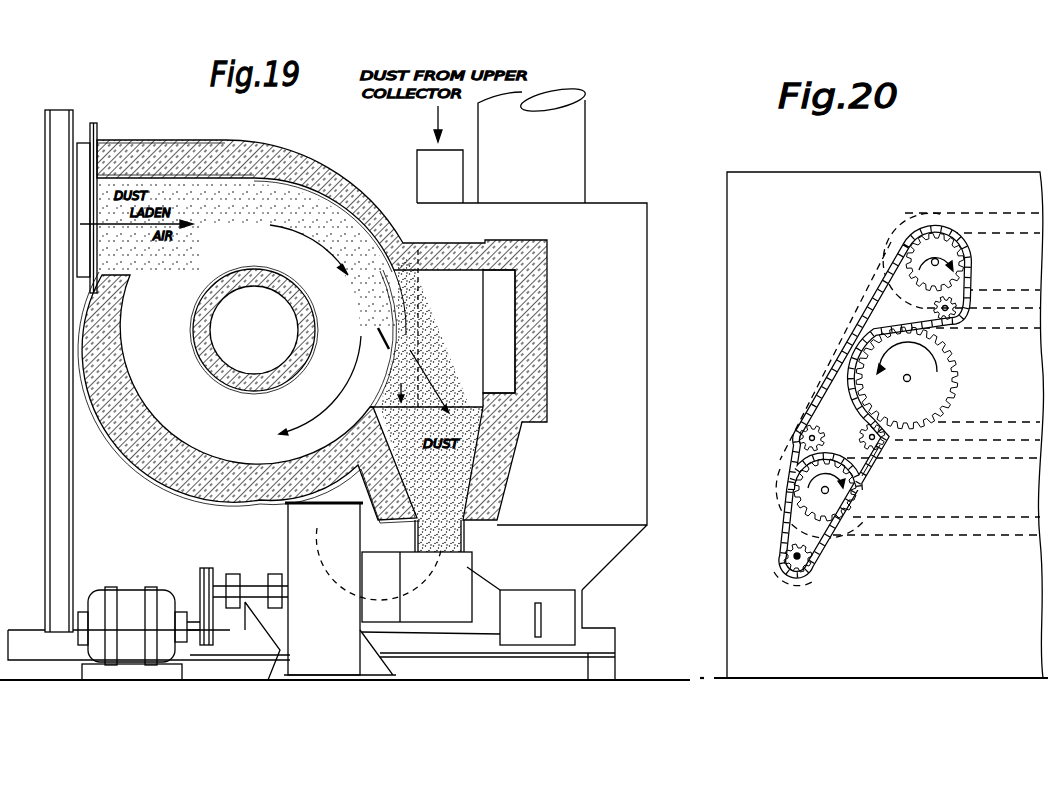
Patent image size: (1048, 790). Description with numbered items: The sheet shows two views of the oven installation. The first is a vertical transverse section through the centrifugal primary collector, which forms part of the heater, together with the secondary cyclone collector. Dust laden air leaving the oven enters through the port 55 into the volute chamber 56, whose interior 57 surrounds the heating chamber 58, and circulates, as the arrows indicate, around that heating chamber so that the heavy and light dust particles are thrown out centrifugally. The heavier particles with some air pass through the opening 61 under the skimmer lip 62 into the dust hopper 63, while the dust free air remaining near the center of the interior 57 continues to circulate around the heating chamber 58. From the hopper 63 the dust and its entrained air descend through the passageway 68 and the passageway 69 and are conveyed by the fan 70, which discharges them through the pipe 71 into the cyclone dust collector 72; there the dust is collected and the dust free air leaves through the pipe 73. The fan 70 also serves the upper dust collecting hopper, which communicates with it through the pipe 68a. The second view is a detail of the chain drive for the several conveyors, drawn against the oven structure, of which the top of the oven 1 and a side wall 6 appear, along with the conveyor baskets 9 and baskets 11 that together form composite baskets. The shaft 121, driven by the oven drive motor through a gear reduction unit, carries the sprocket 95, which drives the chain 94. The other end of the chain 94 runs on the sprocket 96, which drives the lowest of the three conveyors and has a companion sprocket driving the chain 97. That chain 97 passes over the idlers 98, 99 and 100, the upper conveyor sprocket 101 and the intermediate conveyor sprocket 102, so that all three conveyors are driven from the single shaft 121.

In FIG. 19, the port 55 is at (102, 195).
In FIG. 19, the volute chamber 56 is at (172, 457).
In FIG. 19, the interior of the volute chamber 57 is at (198, 397).
In FIG. 19, the heating chamber 58 is at (316, 342).
In FIG. 19, the opening 61 is at (403, 333).
In FIG. 19, the skimmer lip 62 is at (381, 340).
In FIG. 19, the dust hopper 63 is at (462, 362).
In FIG. 19, the passageway 68 is at (466, 543).
In FIG. 19, the pipe 68a is at (418, 176).
In FIG. 19, the passageway 69 is at (470, 595).
In FIG. 19, the fan 70 is at (288, 550).
In FIG. 19, the pipe 71 is at (345, 496).
In FIG. 19, the cyclone dust collector 72 is at (618, 297).
In FIG. 19, the pipe 73 is at (586, 124).
In FIG. 20, the top of the oven 1 is at (896, 172).
In FIG. 20, the side wall 6 is at (826, 252).
In FIG. 20, the basket 9 is at (1026, 332).
In FIG. 20, the basket 11 is at (1026, 218).
In FIG. 20, the chain 94 is at (834, 538).
In FIG. 20, the sprocket 95 is at (800, 582).
In FIG. 20, the sprocket 96 is at (844, 500).
In FIG. 20, the chain 97 is at (866, 473).
In FIG. 20, the idler 98 is at (822, 430).
In FIG. 20, the idler 99 is at (886, 437).
In FIG. 20, the idler 100 is at (960, 316).
In FIG. 20, the upper conveyor sprocket 101 is at (957, 268).
In FIG. 20, the intermediate conveyor sprocket 102 is at (950, 388).
In FIG. 20, the shaft 121 is at (799, 561).